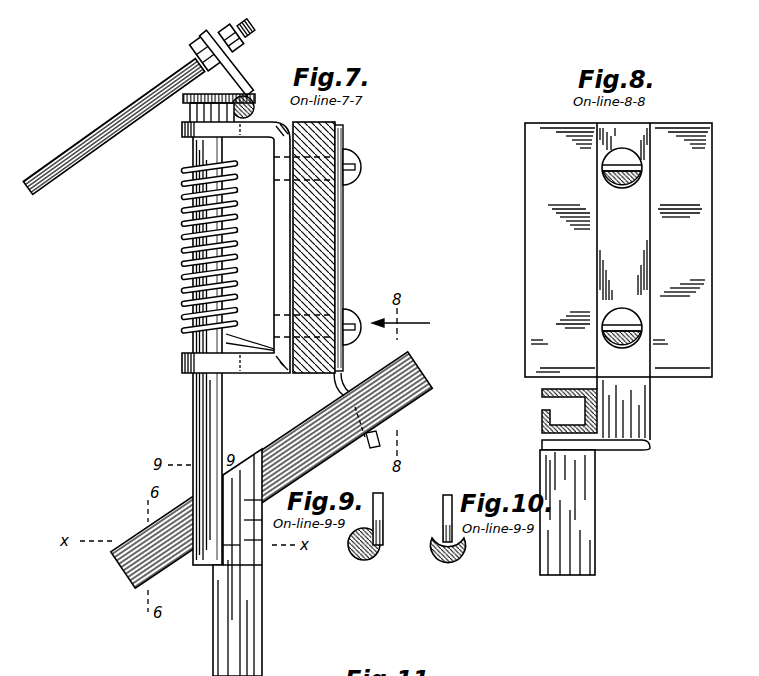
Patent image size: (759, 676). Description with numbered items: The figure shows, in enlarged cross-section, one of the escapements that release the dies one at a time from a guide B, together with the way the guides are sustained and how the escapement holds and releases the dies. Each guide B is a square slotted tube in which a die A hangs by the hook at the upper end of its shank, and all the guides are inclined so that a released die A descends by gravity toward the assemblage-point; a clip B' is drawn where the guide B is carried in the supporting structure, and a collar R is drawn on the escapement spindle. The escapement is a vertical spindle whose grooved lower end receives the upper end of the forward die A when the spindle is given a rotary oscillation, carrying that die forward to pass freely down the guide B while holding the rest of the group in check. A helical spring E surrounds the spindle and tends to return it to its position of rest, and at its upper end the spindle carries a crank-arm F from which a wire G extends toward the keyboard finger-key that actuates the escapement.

In FIG. 7, the die A is at (262, 651).
In FIG. 9, the die A is at (383, 500).
In FIG. 10, the die A is at (443, 512).
In FIG. 7, the endless guide B is at (266, 477).
In FIG. 8, the clip bracket B' is at (555, 411).
In FIG. 7, the helical spring E is at (230, 227).
In FIG. 9, the helical spring E is at (365, 554).
In FIG. 10, the helical spring E is at (448, 559).
In FIG. 7, the crank-arm F is at (250, 96).
In FIG. 7, the wire G is at (113, 127).
In FIG. 7, the collar R is at (184, 97).